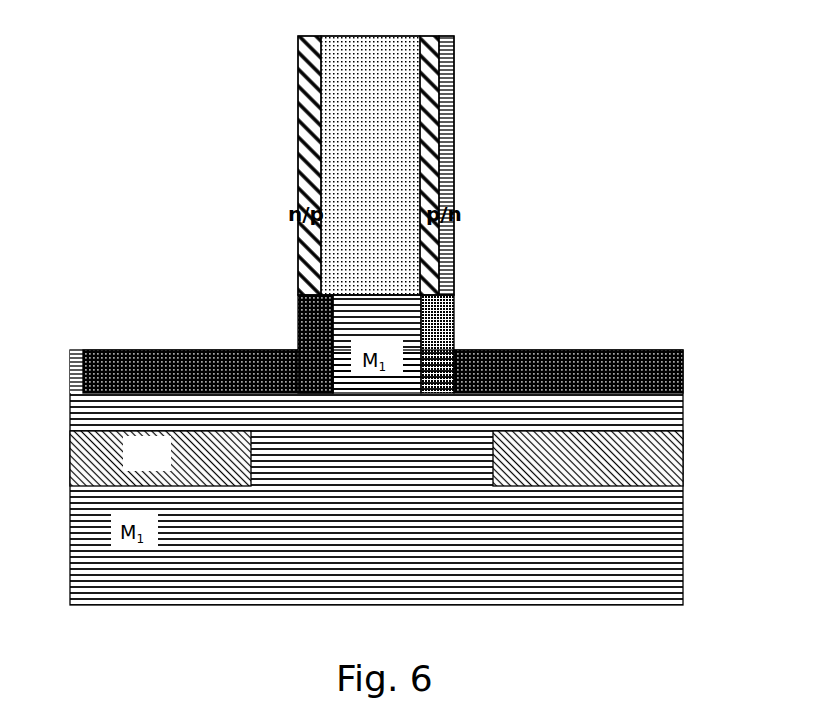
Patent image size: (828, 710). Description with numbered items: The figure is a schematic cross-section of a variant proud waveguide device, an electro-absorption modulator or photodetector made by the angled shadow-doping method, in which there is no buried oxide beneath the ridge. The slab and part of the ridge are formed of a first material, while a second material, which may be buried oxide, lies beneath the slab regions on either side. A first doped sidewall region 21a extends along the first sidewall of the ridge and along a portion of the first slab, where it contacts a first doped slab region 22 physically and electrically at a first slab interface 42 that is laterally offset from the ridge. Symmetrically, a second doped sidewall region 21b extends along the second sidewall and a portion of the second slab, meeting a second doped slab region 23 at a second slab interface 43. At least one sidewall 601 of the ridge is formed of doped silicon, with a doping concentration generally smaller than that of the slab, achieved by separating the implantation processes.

The first doped sidewall region 21a is at (292, 130).
The second doped sidewall region 21b is at (445, 143).
The sidewall of the ridge 601 is at (432, 108).
The first doped slab region 22 is at (127, 340).
The second doped slab region 23 is at (620, 340).
The first slab interface 42 is at (288, 332).
The second slab interface 43 is at (441, 331).